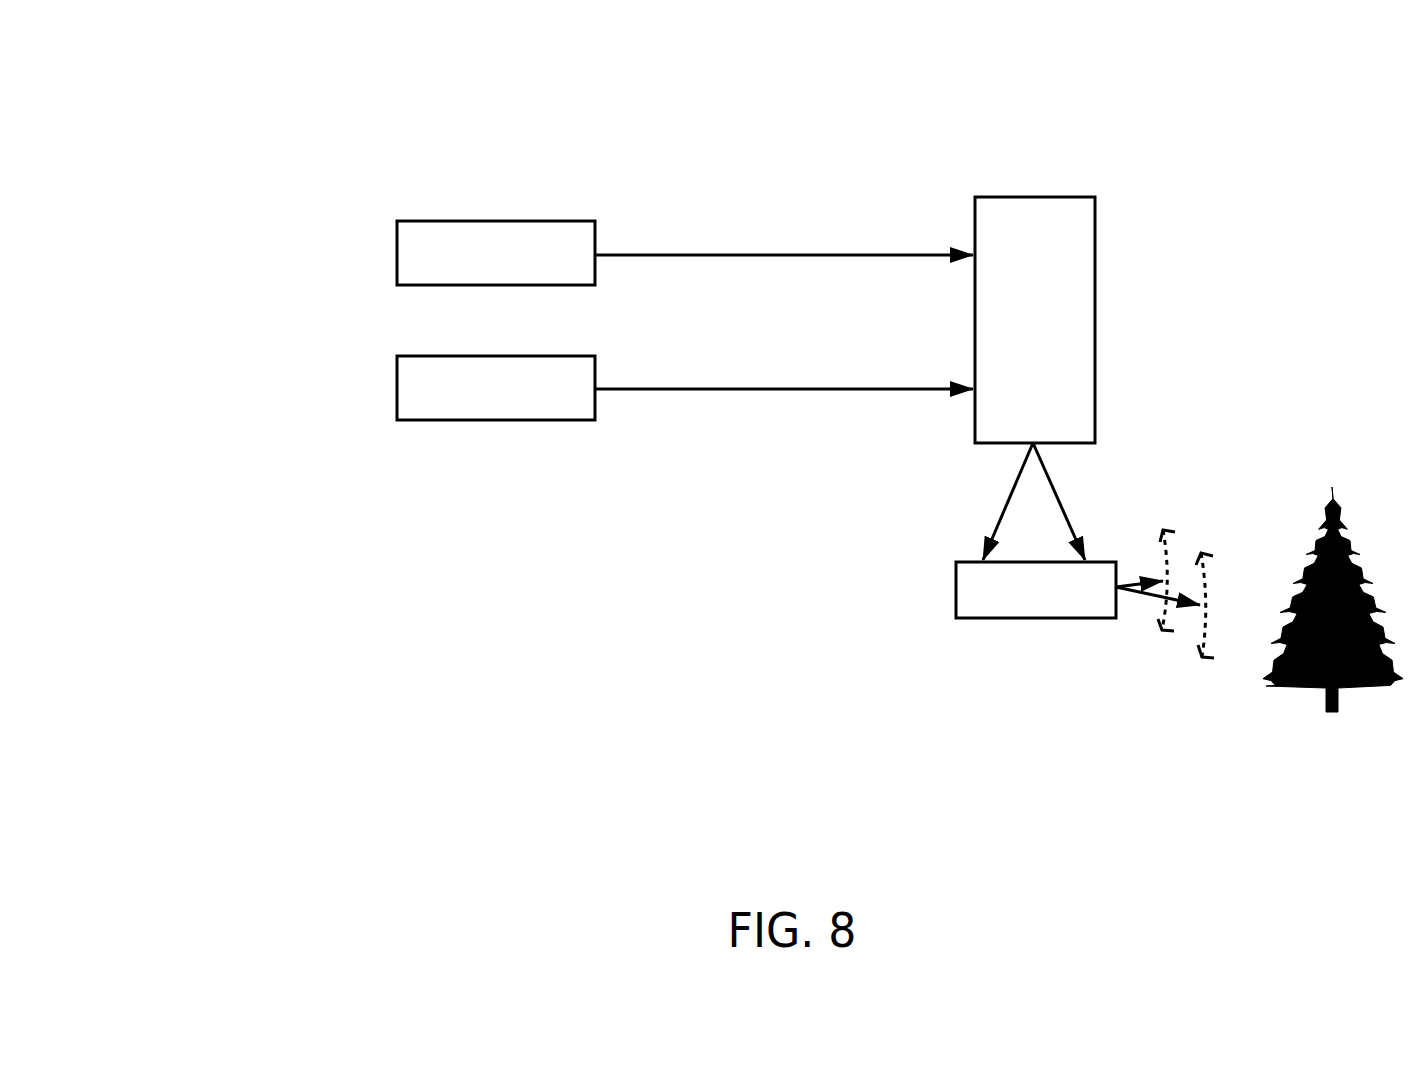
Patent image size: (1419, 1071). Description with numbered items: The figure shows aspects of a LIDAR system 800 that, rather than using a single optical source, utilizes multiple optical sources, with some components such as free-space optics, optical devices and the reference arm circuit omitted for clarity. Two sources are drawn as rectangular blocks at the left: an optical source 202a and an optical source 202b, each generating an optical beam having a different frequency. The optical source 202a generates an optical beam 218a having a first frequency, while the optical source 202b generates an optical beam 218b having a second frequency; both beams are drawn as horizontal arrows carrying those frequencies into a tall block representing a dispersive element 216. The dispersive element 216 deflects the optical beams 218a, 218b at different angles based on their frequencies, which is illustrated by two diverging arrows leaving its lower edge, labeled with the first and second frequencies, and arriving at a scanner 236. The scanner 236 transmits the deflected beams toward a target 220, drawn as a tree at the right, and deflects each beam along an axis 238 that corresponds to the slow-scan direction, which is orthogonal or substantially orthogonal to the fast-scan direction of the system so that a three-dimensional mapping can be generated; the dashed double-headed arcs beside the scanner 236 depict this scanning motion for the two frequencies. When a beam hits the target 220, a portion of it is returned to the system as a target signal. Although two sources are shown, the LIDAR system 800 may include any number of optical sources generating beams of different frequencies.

The LIDAR system 800 is at (157, 87).
The optical source 202a is at (397, 221).
The optical source 202b is at (397, 420).
The optical beam 218a is at (784, 236).
The optical beam 218b is at (784, 370).
The dispersive element 216 is at (1023, 195).
The scanner 236 is at (1092, 601).
The axis 238 is at (1187, 657).
The target 220 is at (1318, 697).